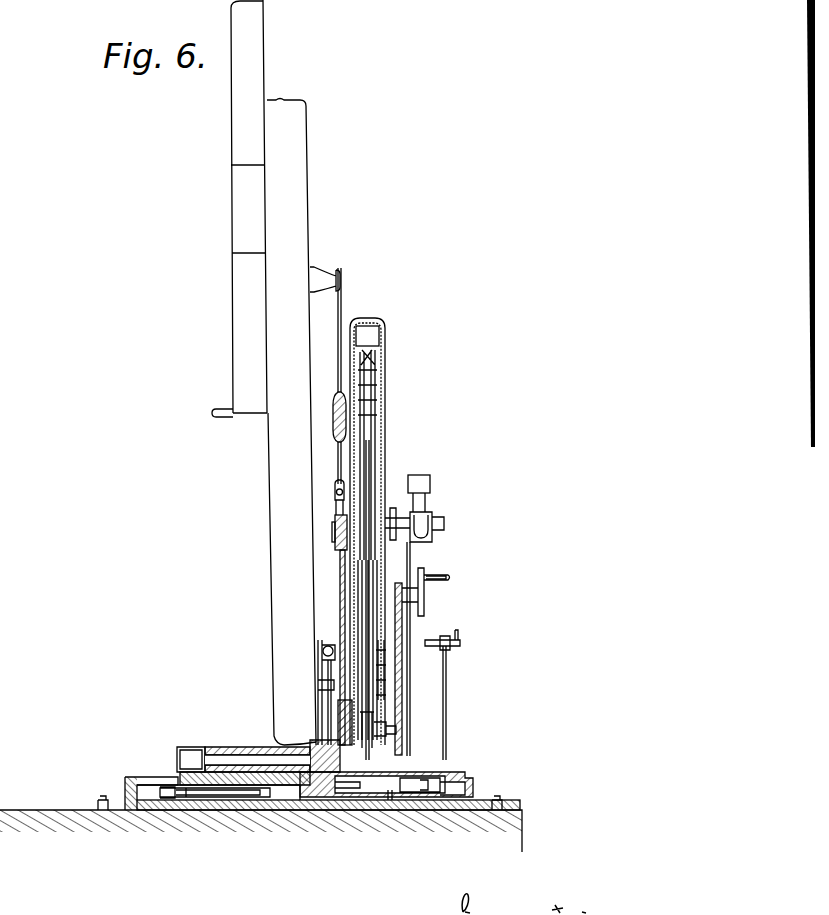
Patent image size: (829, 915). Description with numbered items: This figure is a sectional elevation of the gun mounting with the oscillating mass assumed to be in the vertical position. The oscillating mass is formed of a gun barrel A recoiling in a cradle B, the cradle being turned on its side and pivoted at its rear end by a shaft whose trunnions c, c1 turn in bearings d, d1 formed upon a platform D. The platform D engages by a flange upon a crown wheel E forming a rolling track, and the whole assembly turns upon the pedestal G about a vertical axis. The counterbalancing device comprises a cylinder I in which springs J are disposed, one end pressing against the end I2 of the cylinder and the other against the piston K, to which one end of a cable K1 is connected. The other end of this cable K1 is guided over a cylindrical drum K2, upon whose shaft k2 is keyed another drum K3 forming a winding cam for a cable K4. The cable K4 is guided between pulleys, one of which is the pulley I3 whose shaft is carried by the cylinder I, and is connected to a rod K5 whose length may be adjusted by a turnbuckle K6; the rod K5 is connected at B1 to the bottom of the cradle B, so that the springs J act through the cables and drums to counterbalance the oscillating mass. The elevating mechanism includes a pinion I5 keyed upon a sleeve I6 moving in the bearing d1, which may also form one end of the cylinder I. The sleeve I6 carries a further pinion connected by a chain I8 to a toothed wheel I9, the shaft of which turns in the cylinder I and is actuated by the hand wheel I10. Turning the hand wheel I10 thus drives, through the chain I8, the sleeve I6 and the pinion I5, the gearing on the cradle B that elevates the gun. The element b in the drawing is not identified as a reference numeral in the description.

The gun barrel A is at (239, 137).
The cradle B is at (300, 180).
The connection point on cradle bottom B1 is at (326, 280).
The rod K5 is at (342, 314).
The turnbuckle K6 is at (338, 430).
The pulley I3 is at (335, 530).
The cable K4 is at (340, 568).
The piston K is at (372, 337).
The springs J is at (378, 398).
The cylinder I is at (384, 430).
The cable K1 is at (369, 456).
The toothed wheel I9 is at (402, 590).
The hand wheel I10 is at (448, 578).
The chain I8 is at (398, 632).
The drum forming winding cam K3 is at (340, 712).
The end of cylinder I2 is at (386, 700).
The cylindrical drum K2 is at (390, 728).
The shaft of the drum k2 is at (396, 730).
The pedestal G is at (47, 820).
The crown wheel E is at (216, 802).
The platform D is at (132, 778).
The pinion I5 is at (325, 790).
The rail b is at (215, 748).
The bearing d is at (188, 748).
The trunnion c is at (245, 758).
The sleeve I6 is at (372, 790).
The trunnion c1 is at (345, 790).
The bearing d1 is at (390, 790).